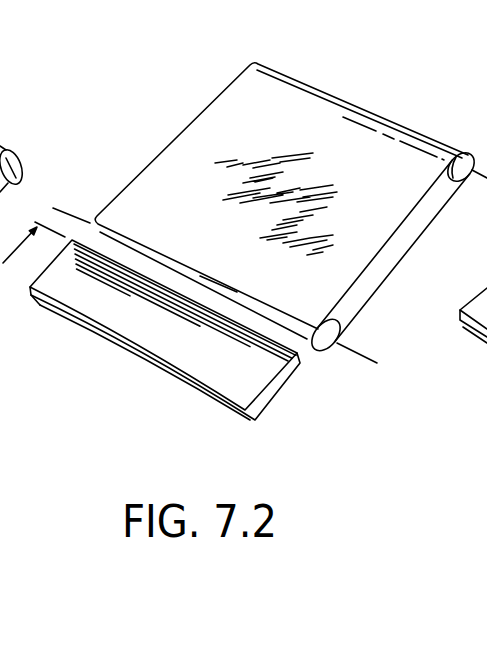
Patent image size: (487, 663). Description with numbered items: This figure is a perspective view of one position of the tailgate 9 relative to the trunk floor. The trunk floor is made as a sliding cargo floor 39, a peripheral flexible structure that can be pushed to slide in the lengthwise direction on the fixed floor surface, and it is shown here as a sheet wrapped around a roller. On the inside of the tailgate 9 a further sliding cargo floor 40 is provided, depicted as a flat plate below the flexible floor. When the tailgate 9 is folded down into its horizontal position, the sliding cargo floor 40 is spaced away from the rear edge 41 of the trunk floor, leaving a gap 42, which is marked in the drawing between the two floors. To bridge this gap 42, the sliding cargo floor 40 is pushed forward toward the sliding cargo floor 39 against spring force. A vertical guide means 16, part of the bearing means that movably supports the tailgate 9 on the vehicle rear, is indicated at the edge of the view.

The tailgate 9 is at (122, 360).
The vertical guide means 16 is at (473, 284).
The sliding cargo floor 39 is at (327, 147).
The sliding cargo floor 40 is at (187, 343).
The rear edge 41 is at (50, 207).
The gap 42 is at (50, 218).